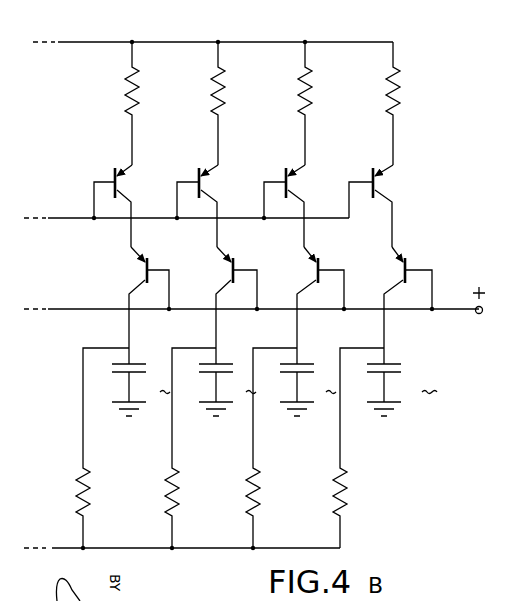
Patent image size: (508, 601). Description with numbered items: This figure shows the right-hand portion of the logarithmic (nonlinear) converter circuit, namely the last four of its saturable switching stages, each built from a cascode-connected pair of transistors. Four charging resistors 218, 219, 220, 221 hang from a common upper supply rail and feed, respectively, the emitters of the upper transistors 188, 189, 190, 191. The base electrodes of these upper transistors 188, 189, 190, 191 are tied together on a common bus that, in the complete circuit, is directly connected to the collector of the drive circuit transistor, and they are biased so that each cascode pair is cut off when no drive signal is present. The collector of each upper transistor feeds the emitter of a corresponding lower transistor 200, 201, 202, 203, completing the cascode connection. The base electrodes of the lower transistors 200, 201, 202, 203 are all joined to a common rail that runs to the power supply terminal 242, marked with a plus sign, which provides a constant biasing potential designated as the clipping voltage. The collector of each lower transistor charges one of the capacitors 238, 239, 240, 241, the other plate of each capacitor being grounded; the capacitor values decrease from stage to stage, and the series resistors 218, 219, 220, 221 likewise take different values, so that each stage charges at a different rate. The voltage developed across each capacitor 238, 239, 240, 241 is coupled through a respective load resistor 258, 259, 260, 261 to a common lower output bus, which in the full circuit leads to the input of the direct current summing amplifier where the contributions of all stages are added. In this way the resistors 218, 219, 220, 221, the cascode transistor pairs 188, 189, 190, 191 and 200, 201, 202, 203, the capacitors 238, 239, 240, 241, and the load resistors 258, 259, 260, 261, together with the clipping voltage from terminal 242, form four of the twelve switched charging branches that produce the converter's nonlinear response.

The resistor 218 is at (139, 84).
The resistor 219 is at (225, 84).
The resistor 220 is at (312, 84).
The resistor 221 is at (400, 84).
The transistor 188 is at (124, 173).
The transistor 189 is at (208, 173).
The transistor 190 is at (295, 173).
The transistor 191 is at (382, 173).
The transistor 200 is at (144, 271).
The transistor 201 is at (230, 271).
The transistor 202 is at (315, 271).
The transistor 203 is at (402, 271).
The capacitor 238 is at (136, 362).
The capacitor 239 is at (223, 362).
The capacitor 240 is at (316, 341).
The capacitor 241 is at (391, 362).
The load resistor 258 is at (90, 491).
The load resistor 259 is at (179, 491).
The load resistor 260 is at (260, 491).
The load resistor 261 is at (348, 491).
The power supply terminal 242 is at (482, 313).